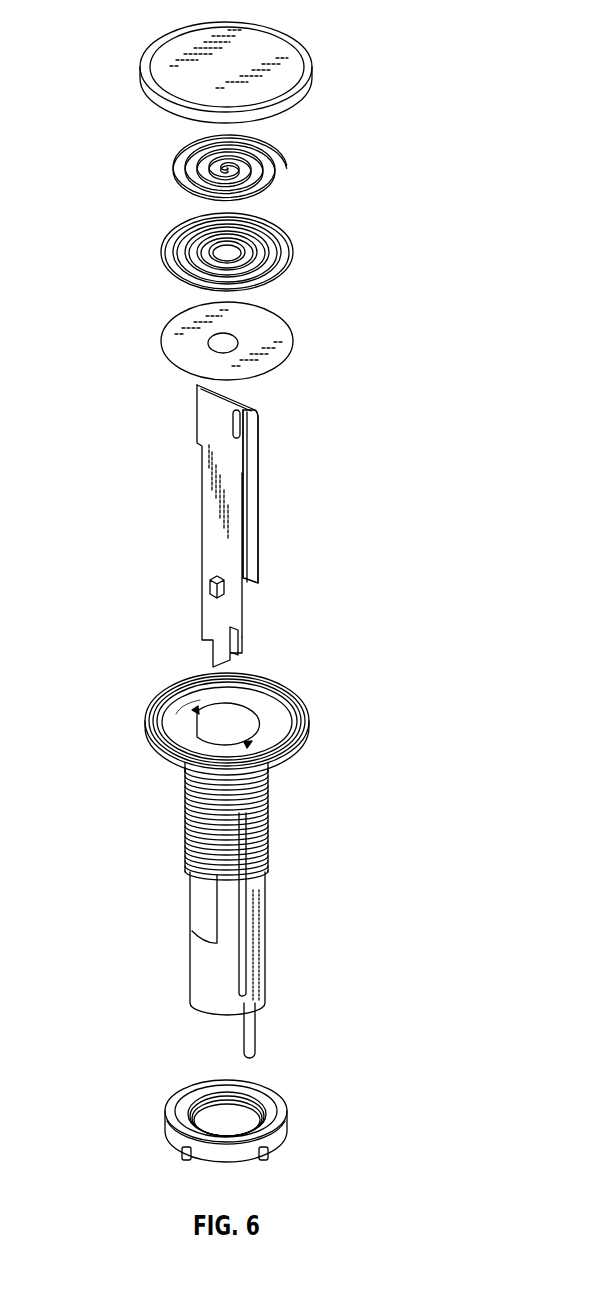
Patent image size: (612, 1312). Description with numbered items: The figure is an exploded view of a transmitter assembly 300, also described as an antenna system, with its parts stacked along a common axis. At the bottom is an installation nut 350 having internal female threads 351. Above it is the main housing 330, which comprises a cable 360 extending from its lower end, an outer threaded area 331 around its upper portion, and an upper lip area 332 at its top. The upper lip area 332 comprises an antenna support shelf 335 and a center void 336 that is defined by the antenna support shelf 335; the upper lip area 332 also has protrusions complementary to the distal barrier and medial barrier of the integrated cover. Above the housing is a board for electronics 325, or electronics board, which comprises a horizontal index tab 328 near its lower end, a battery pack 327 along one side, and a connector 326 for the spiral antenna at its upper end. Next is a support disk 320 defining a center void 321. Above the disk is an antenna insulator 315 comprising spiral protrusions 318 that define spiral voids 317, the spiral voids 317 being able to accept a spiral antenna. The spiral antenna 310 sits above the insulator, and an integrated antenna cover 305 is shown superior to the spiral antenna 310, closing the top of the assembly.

The transmitter assembly 300 is at (152, 559).
The integrated antenna cover 305 is at (250, 57).
The spiral antenna 310 is at (287, 170).
The antenna insulator 315 is at (287, 253).
The spiral voids 317 is at (172, 240).
The spiral protrusions 318 is at (277, 253).
The support disk 320 is at (264, 337).
The center void 321 is at (222, 343).
The board for electronics 325 is at (237, 526).
The connector 326 is at (205, 388).
The battery pack 327 is at (262, 498).
The horizontal index tab 328 is at (240, 647).
The main housing 330 is at (262, 932).
The outer threaded area 331 is at (185, 800).
The upper lip area 332 is at (243, 716).
The antenna support shelf 335 is at (170, 718).
The center void 336 is at (225, 722).
The installation nut 350 is at (240, 1114).
The internal female threads 351 is at (205, 1100).
The cable 360 is at (255, 1035).